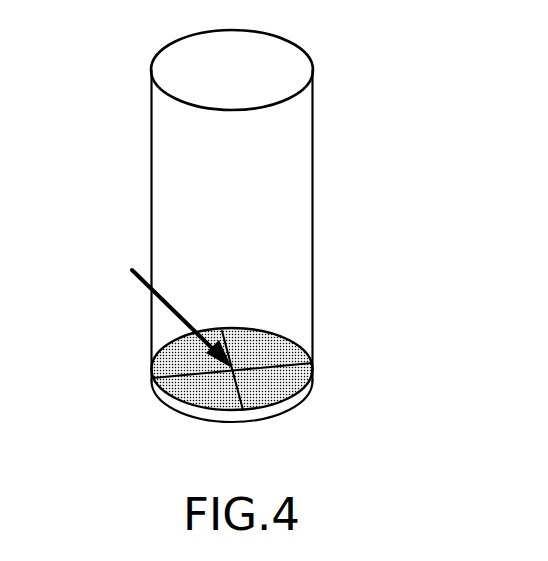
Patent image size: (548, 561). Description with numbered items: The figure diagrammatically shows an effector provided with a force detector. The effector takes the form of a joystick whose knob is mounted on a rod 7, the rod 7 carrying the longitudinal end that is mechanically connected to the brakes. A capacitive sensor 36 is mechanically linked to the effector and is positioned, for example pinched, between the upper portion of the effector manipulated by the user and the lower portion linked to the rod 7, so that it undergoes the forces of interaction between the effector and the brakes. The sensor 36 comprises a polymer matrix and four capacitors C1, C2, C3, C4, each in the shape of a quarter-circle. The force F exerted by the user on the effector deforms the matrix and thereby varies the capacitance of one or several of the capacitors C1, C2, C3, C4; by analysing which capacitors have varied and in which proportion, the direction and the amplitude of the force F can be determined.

The rod 7 is at (288, 141).
The capacitive sensor 36 is at (311, 396).
The capacitor C1 is at (272, 350).
The capacitor C2 is at (270, 390).
The capacitor C3 is at (205, 390).
The capacitor C4 is at (170, 362).
The force F is at (141, 281).